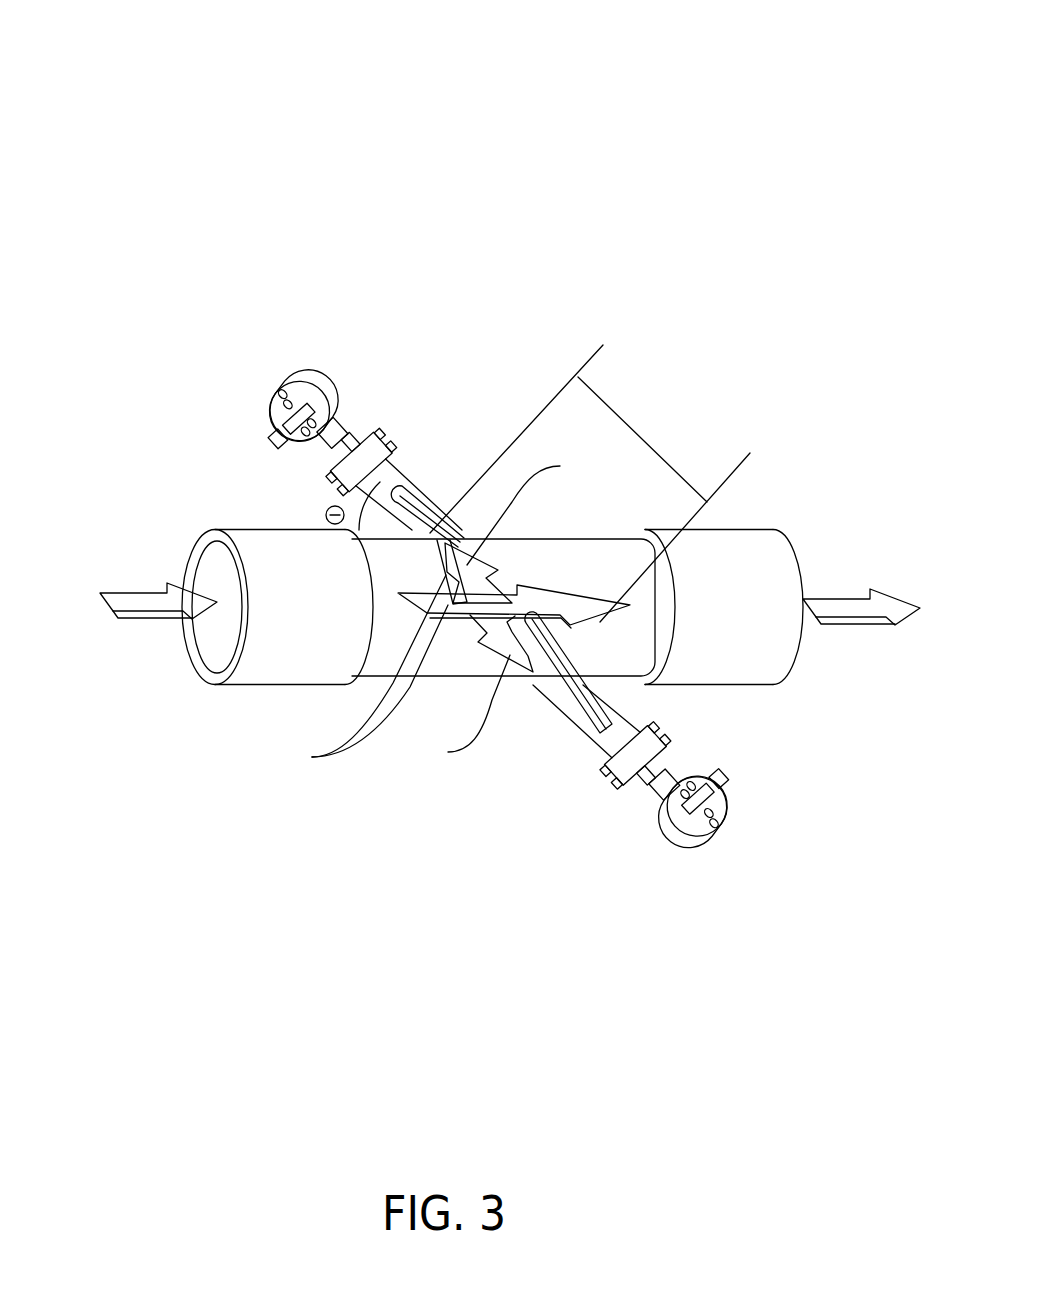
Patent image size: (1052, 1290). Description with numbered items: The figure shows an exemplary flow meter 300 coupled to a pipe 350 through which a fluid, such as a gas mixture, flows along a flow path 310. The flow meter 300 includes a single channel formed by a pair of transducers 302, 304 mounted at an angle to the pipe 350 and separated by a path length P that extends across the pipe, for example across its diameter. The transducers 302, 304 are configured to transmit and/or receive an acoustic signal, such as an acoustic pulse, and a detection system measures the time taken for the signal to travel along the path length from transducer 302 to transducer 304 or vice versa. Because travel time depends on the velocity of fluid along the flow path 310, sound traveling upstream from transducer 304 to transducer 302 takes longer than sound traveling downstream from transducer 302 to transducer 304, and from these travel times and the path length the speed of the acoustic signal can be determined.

The flow meter 300 is at (108, 83).
The transducer 302 is at (416, 512).
The transducer 304 is at (587, 708).
The flow path 310 is at (840, 606).
The pipe 350 is at (750, 527).